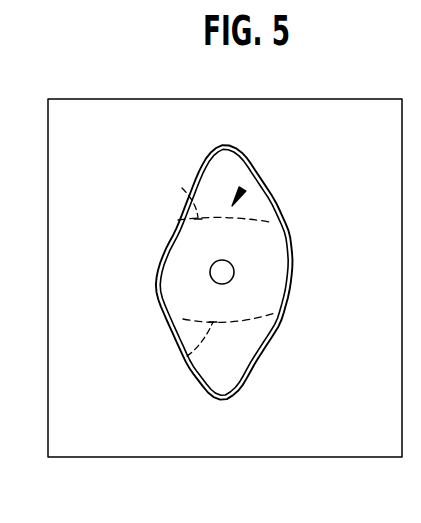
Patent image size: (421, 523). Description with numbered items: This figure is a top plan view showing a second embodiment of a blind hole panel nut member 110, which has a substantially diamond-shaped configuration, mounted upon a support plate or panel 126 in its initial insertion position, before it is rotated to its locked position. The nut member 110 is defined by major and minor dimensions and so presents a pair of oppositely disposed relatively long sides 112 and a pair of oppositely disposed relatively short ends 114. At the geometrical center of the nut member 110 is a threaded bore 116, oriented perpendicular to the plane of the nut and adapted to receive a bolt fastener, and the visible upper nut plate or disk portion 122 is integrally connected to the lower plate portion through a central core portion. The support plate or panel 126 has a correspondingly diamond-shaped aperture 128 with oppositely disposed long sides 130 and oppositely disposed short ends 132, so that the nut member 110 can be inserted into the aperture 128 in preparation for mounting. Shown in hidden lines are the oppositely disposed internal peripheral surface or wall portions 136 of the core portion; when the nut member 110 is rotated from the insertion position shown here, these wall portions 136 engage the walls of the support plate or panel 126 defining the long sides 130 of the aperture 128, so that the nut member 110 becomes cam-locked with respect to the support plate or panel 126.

The blind hole panel nut member 110 is at (242, 189).
The long sides 112 is at (185, 320).
The short ends 114 is at (216, 146).
The threaded bore 116 is at (226, 272).
The upper nut plate or disk portion 122 is at (262, 277).
The support plate or panel 126 is at (82, 112).
The aperture 128 is at (178, 199).
The long sides of aperture 130 is at (156, 281).
The short ends of aperture 132 is at (234, 149).
The internal peripheral surface or wall portions 136 is at (182, 188).